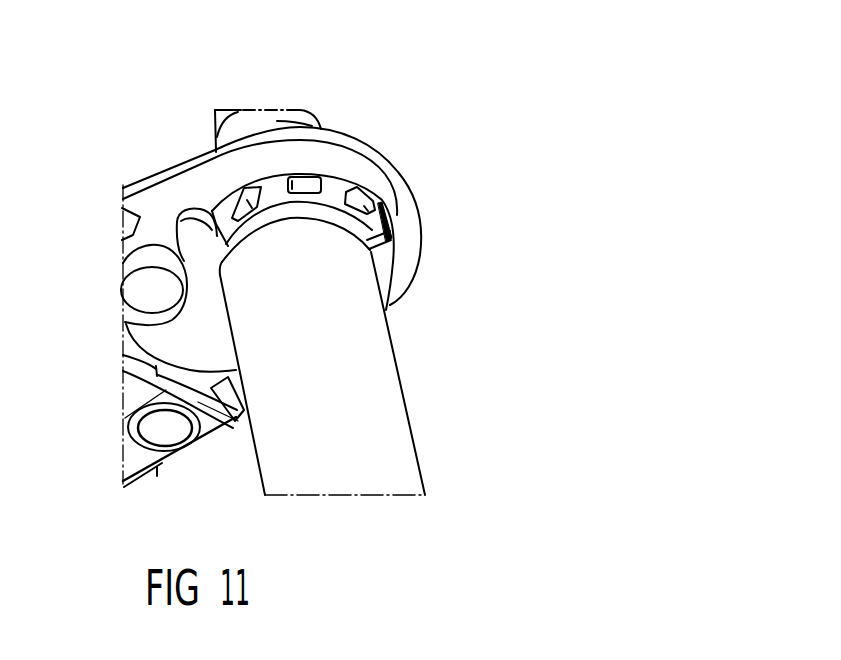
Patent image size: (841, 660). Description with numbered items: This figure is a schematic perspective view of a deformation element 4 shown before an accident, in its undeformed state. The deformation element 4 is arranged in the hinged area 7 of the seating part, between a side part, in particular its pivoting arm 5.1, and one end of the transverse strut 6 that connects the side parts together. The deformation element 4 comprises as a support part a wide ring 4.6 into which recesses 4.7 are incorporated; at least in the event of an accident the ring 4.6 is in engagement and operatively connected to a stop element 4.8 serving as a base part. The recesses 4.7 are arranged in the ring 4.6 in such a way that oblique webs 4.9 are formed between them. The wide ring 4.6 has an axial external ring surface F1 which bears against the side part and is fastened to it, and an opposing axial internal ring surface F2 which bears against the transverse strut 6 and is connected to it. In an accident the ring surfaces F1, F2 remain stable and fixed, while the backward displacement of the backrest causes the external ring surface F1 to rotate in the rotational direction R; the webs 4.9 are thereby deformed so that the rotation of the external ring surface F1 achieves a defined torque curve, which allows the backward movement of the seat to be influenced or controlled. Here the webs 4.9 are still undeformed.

The hinged area 7 is at (416, 74).
The deformation element 4 is at (396, 229).
The wide ring 4.6 is at (344, 186).
The recesses 4.7 is at (243, 200).
The stop element 4.8 is at (191, 242).
The oblique webs 4.9 is at (340, 187).
The pivoting arm 5.1 is at (402, 209).
The transverse strut 6 is at (388, 400).
The axial external ring surface F1 is at (281, 172).
The axial internal ring surface F2 is at (291, 223).
The rotational direction R is at (203, 146).